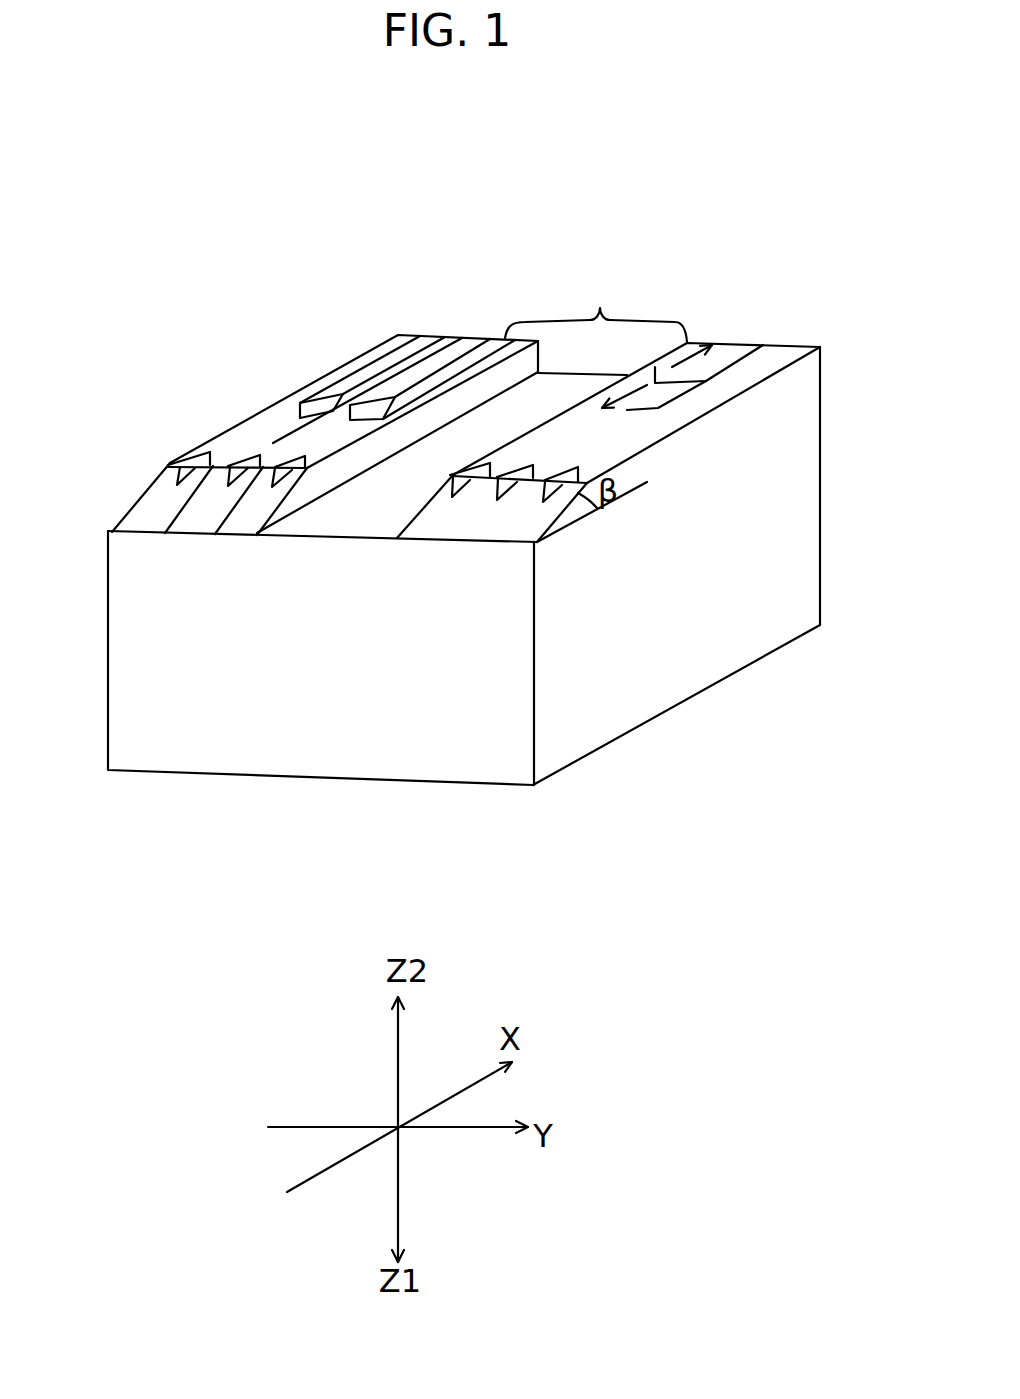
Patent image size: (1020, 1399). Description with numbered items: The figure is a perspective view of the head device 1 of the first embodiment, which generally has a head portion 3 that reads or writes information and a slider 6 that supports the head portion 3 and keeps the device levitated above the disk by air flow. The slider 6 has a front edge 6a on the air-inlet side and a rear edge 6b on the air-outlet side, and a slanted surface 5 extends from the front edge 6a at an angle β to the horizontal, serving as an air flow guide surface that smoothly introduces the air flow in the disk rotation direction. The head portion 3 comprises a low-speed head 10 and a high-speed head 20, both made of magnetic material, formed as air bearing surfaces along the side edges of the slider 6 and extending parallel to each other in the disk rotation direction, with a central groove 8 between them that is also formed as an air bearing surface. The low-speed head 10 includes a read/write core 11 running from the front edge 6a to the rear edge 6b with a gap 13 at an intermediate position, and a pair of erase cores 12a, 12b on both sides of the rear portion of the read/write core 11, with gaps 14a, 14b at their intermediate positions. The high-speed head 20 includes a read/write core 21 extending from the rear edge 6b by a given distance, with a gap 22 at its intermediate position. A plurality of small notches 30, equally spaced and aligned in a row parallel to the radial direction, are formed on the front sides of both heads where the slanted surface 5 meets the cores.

The head device 1 is at (232, 795).
The head portion 3 is at (596, 306).
The slanted surface 5 is at (155, 522).
The slider 6 is at (802, 480).
The front edge 6a is at (540, 548).
The rear edge 6b is at (823, 350).
The central groove 8 is at (337, 525).
The low-speed head 10 is at (470, 320).
The read/write core 11 is at (247, 448).
The erase core 12a is at (383, 367).
The erase core 12b is at (440, 370).
The gap 13 is at (273, 443).
The gap 14a is at (305, 403).
The gap 14b is at (365, 398).
The high-speed head 20 is at (745, 336).
The read/write core 21 is at (660, 410).
The gap 22 is at (707, 380).
The small notches 30 is at (165, 467).